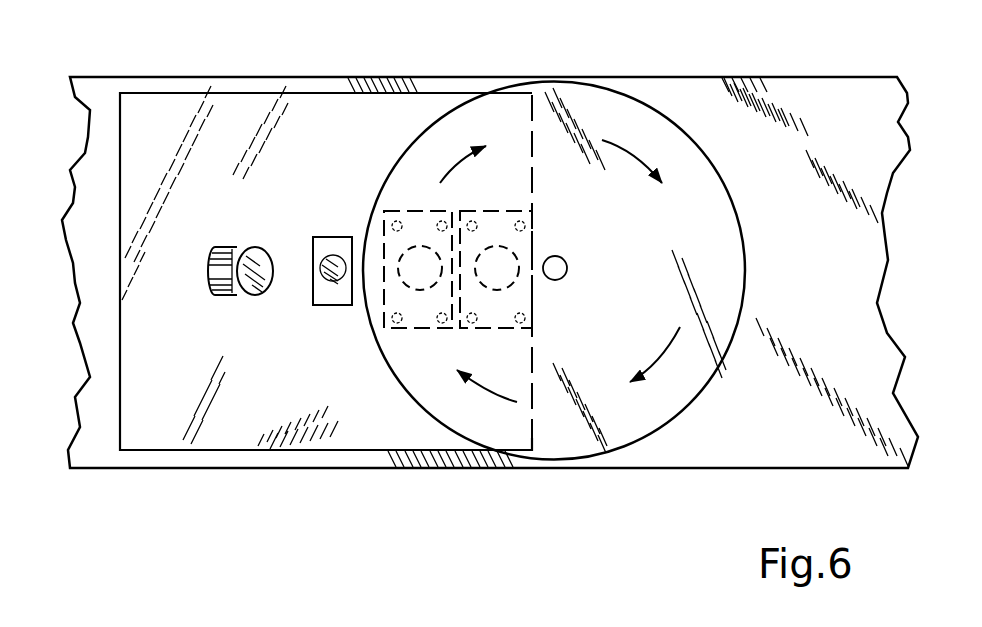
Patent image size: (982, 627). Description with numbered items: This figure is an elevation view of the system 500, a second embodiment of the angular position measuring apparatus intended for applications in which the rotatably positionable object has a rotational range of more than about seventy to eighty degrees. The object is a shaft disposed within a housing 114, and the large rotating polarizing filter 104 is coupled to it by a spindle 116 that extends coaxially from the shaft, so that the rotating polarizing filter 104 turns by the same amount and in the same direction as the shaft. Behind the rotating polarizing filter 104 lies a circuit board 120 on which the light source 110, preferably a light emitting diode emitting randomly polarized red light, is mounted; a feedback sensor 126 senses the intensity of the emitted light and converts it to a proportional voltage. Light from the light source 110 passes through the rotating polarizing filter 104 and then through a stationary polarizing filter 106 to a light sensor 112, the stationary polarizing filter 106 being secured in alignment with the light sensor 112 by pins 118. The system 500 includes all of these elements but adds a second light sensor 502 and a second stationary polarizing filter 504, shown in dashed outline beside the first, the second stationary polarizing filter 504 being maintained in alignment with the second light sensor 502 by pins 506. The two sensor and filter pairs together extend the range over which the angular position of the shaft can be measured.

The rotating polarizing filter 104 is at (720, 175).
The stationary polarizing filter 106 is at (487, 213).
The light source 110 is at (226, 247).
The light sensor 112 is at (511, 252).
The housing 114 is at (664, 77).
The spindle 116 is at (567, 269).
The pins 118 is at (472, 322).
The circuit board 120 is at (176, 93).
The feedback sensor 126 is at (313, 242).
The system 500 is at (322, 68).
The second light sensor 502 is at (384, 310).
The second stationary polarizing filter 504 is at (417, 211).
The pins 506 is at (455, 212).